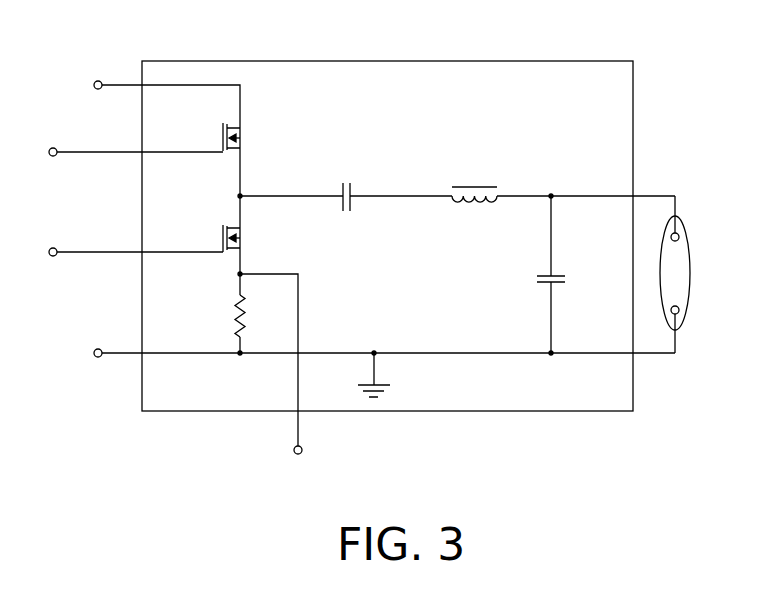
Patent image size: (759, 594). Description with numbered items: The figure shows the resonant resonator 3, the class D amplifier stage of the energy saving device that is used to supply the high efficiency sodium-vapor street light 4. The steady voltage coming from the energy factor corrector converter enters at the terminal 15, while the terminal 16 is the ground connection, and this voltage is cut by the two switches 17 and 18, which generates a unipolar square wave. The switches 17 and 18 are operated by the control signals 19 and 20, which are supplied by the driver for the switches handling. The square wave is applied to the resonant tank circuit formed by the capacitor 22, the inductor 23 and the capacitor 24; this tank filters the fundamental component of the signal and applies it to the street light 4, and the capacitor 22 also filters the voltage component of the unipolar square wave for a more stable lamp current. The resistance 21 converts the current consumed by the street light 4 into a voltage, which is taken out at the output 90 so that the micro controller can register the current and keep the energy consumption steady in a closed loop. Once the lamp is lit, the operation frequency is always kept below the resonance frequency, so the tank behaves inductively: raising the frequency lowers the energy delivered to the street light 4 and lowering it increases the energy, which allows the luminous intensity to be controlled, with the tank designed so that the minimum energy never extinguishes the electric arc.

The resonant resonator 3 is at (492, 61).
The high efficiency sodium-vapor street light 4 is at (682, 274).
The terminal 15 is at (152, 101).
The terminal 16 is at (369, 353).
The switch 17 is at (249, 137).
The switch 18 is at (249, 238).
The control signal 19 is at (119, 152).
The control signal 20 is at (120, 252).
The resistance 21 is at (221, 316).
The capacitor 22 is at (392, 183).
The inductor 23 is at (563, 179).
The capacitor 24 is at (563, 274).
The current sense output terminal 90 is at (284, 367).